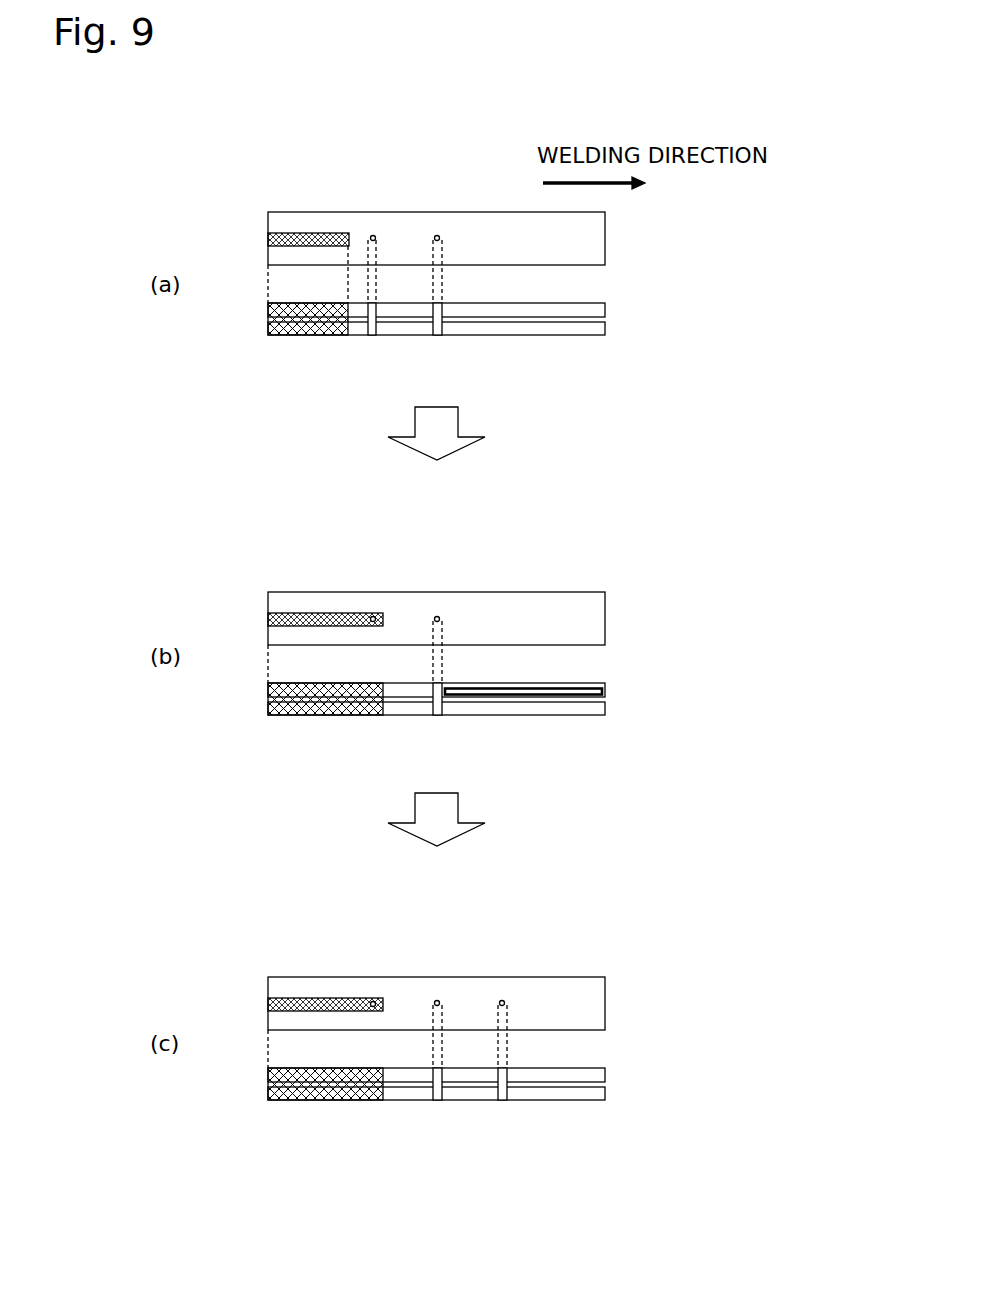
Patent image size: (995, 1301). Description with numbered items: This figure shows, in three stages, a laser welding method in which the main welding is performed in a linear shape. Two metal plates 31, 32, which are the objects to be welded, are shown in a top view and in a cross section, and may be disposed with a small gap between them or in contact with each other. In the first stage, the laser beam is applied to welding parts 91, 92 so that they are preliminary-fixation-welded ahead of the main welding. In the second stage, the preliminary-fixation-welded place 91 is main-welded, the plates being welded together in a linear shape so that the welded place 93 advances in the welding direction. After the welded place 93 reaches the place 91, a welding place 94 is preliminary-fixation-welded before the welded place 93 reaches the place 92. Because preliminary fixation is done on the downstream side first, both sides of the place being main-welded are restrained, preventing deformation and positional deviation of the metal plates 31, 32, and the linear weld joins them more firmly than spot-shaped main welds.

The metal plate 31 is at (605, 235).
The metal plate 32 is at (597, 335).
The welding part 91 is at (371, 236).
The welding part 92 is at (436, 236).
The welded place 93 is at (305, 233).
The welding place 94 is at (495, 1007).